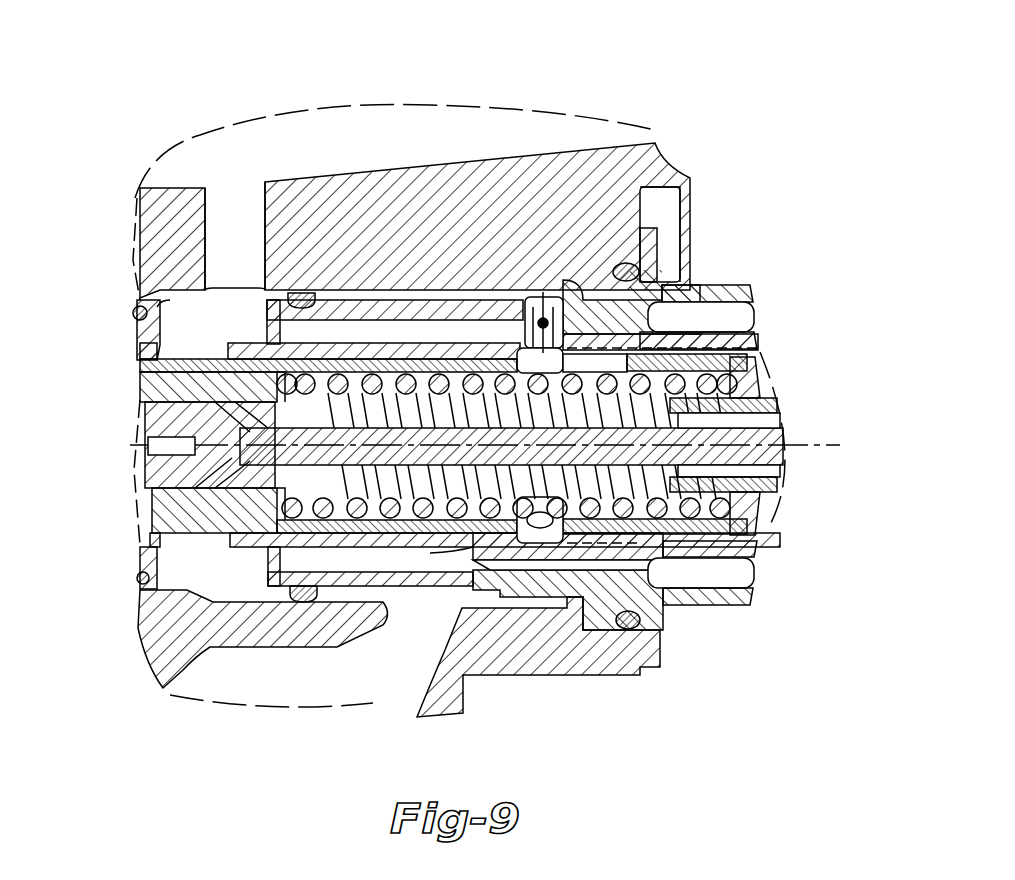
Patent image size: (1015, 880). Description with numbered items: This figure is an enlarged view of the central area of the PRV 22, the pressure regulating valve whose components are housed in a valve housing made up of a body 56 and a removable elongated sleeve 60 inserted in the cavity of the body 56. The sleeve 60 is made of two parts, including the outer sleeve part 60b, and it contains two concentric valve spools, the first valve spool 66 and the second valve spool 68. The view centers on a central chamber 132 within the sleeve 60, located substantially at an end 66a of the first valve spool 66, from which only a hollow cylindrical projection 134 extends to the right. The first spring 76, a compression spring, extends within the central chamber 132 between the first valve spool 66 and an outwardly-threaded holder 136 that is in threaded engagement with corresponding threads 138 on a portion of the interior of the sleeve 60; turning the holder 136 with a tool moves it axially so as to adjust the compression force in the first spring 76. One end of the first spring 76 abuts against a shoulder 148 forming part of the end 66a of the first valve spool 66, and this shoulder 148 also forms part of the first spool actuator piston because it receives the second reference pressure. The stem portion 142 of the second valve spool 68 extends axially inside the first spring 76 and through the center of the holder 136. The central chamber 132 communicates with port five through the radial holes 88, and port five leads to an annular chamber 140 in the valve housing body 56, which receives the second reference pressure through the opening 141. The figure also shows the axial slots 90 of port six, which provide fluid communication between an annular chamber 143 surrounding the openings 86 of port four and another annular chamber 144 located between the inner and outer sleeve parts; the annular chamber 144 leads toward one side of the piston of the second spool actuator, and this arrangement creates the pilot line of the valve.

The PRV 22 is at (858, 176).
The body 56 is at (298, 237).
The sleeve 60 is at (903, 292).
The outer sleeve part 60b is at (740, 292).
The first valve spool 66 is at (195, 510).
The end of the first valve spool 66a is at (747, 338).
The second valve spool 68 is at (170, 420).
The first spring 76 is at (439, 384).
The openings 86 is at (200, 352).
The radial holes 88 is at (592, 363).
The axial slots 90 is at (593, 564).
The central chamber 132 is at (650, 278).
The hollow cylindrical projection 134 is at (350, 362).
The holder 136 is at (713, 532).
The threads 138 is at (758, 537).
The annular chamber 140 is at (440, 294).
The opening 141 is at (380, 675).
The stem portion 142 is at (478, 453).
The annular chamber 143 is at (237, 225).
The annular chamber 144 is at (703, 315).
The shoulder 148 is at (272, 383).